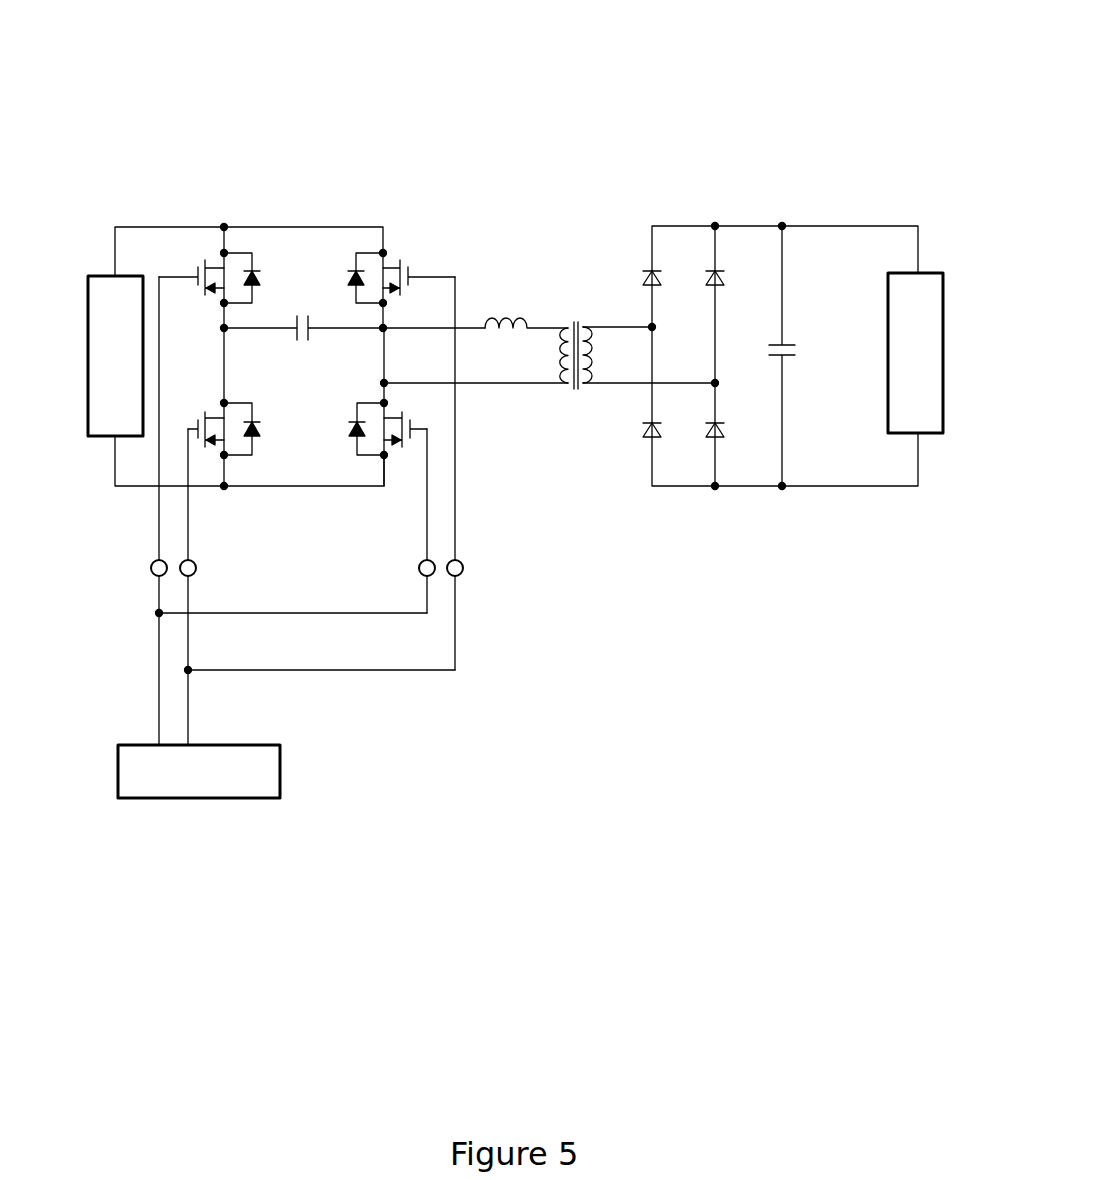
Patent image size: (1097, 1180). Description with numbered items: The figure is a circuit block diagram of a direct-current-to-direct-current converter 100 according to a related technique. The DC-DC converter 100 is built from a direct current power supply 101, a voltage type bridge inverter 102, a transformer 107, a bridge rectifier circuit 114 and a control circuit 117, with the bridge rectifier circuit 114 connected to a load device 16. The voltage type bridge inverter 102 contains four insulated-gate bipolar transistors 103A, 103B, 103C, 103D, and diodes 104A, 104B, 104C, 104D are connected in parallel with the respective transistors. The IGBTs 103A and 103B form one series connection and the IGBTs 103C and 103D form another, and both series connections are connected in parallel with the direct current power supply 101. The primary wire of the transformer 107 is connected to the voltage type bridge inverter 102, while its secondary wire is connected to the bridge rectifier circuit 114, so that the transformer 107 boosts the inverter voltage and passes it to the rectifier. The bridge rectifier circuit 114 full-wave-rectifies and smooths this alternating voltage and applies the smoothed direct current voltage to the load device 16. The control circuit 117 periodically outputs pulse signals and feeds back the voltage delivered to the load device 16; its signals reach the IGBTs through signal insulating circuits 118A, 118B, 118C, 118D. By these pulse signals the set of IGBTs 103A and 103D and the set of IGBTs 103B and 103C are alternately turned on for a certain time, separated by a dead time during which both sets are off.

The direct-current-to-direct-current converter 100 is at (862, 100).
The direct current power supply 101 is at (108, 276).
The voltage type bridge inverter 102 is at (415, 197).
The insulated-gate bipolar transistor 103A is at (198, 268).
The insulated-gate bipolar transistor 103B is at (199, 420).
The insulated-gate bipolar transistor 103C is at (409, 265).
The insulated-gate bipolar transistor 103D is at (418, 430).
The diode 104A is at (255, 255).
The diode 104B is at (254, 458).
The diode 104C is at (355, 258).
The diode 104D is at (358, 458).
The transformer 107 is at (565, 386).
The bridge rectifier circuit 114 is at (685, 195).
The load device 16 is at (936, 436).
The control circuit 117 is at (282, 770).
The signal insulating circuit 118A is at (150, 570).
The signal insulating circuit 118B is at (197, 568).
The signal insulating circuit 118C is at (465, 568).
The signal insulating circuit 118D is at (418, 570).